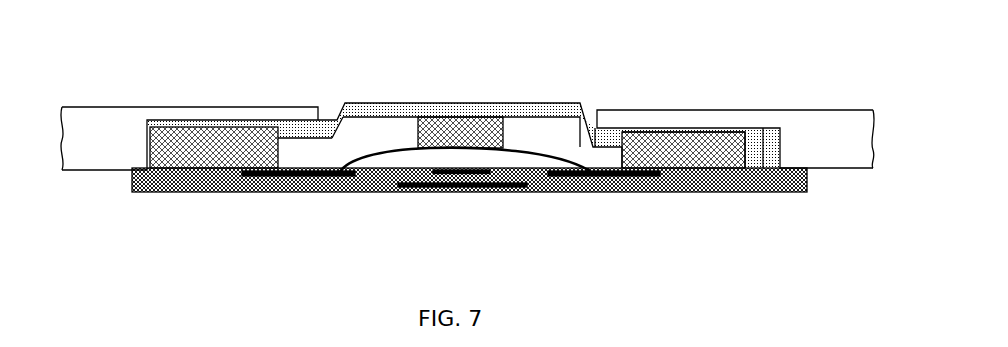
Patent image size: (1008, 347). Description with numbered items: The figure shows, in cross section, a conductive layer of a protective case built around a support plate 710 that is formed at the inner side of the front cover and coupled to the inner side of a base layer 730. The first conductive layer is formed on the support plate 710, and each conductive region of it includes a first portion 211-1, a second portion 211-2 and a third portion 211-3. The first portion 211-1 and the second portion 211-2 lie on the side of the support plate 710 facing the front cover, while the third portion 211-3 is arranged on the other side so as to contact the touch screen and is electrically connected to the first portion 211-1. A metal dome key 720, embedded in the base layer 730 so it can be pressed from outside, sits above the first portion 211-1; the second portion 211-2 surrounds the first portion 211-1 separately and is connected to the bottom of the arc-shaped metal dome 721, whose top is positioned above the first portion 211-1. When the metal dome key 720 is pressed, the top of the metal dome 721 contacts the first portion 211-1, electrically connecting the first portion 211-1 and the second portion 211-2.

The support plate 710 is at (183, 180).
The metal dome key 720 is at (443, 127).
The metal dome 721 is at (380, 148).
The base layer 730 is at (88, 125).
The first portion 211-1 is at (452, 173).
The second portion 211-2 is at (293, 175).
The third portion 211-3 is at (458, 175).